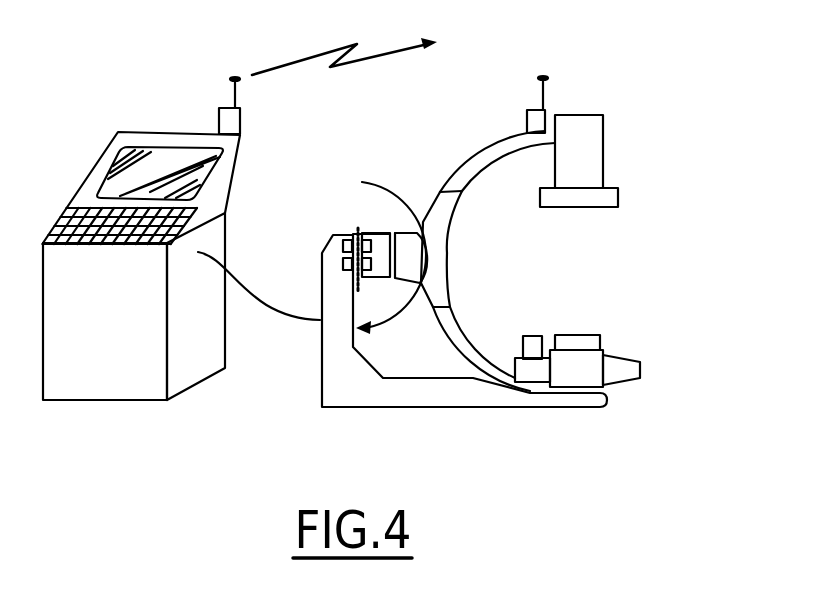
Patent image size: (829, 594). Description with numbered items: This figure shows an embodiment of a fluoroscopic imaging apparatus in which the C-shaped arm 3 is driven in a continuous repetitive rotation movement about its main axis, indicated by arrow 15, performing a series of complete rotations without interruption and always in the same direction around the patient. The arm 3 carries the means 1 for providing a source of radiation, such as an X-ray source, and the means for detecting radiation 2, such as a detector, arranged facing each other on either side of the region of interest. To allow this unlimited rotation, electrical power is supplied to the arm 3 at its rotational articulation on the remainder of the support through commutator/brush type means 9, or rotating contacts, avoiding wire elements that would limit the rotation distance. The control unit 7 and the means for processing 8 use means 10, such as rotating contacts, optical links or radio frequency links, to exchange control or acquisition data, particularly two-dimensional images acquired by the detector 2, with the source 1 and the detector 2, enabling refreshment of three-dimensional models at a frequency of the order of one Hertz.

The means for providing a source of radiation 1 is at (588, 148).
The means for detecting radiation 2 is at (592, 357).
The C-shaped arm 3 is at (492, 146).
The control unit 7 is at (118, 333).
The means for processing 8 is at (230, 177).
The commutator/brush type means 9 is at (368, 238).
The means for exchanging control or acquisition data 10 is at (217, 116).
The arrow indicating continuous repetitive rotation movement 15 is at (417, 198).